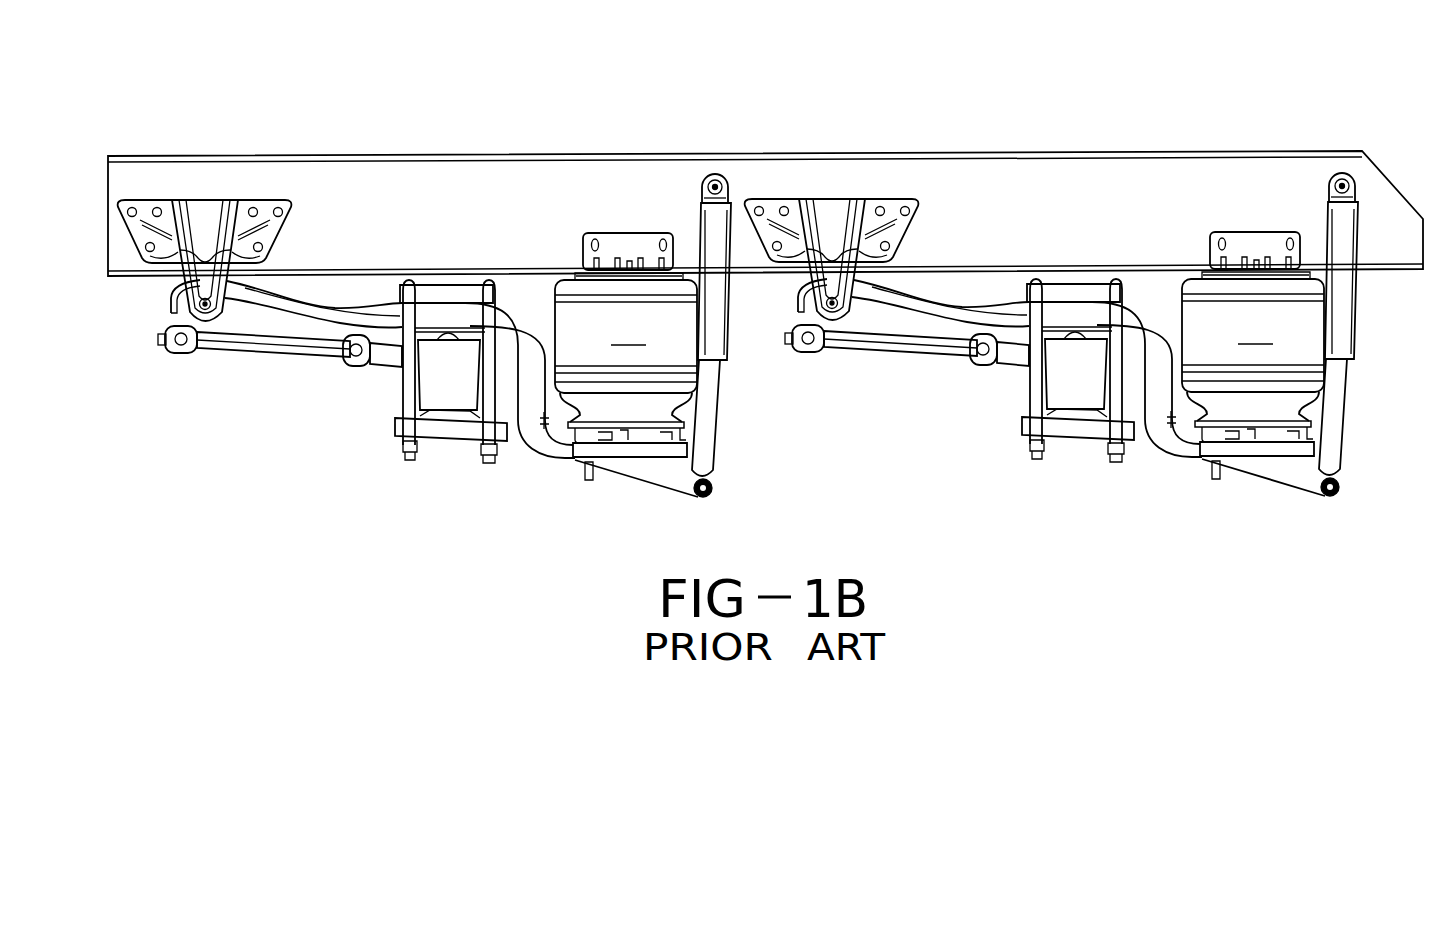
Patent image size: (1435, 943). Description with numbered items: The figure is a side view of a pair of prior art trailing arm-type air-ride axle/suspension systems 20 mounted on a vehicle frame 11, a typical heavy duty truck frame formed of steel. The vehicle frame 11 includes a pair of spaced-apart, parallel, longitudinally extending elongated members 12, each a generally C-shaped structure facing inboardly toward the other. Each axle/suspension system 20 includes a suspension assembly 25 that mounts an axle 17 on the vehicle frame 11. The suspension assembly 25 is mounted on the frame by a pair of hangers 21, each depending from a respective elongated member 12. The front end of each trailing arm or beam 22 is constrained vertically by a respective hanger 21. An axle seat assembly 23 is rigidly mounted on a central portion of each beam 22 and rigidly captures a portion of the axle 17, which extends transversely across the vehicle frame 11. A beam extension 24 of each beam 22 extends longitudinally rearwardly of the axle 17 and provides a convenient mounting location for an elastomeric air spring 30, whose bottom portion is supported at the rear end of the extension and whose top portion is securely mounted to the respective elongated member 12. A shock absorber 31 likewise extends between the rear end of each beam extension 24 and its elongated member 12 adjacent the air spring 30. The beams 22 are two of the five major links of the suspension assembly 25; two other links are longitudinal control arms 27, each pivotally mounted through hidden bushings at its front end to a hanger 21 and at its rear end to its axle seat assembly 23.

The vehicle frame 11 is at (765, 148).
The elongated member 12 is at (543, 177).
The axle 17 is at (435, 378).
The axle/suspension system 20 is at (760, 343).
The hanger 21 is at (140, 210).
The trailing arm or beam 22 is at (352, 303).
The axle seat assembly 23 is at (438, 427).
The beam extension 24 is at (553, 443).
The suspension assembly 25 is at (264, 362).
The longitudinal control arm 27 is at (240, 345).
The air spring 30 is at (940, 364).
The shock absorber 31 is at (708, 410).